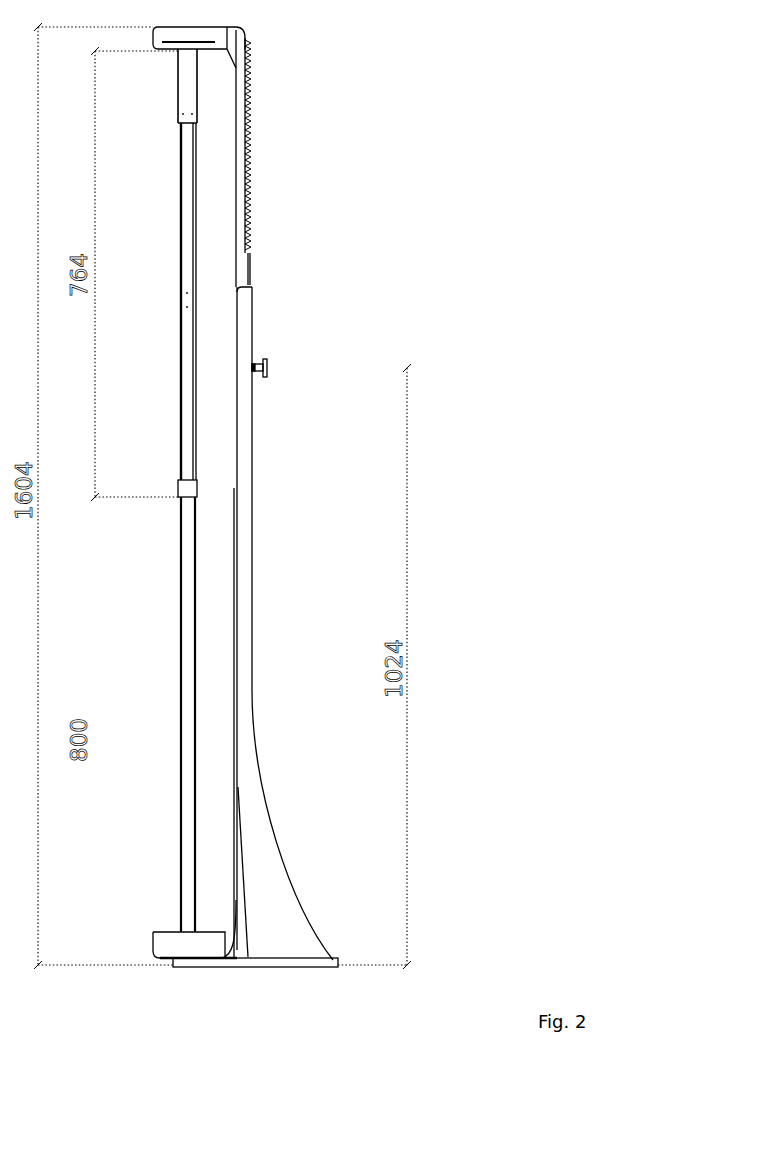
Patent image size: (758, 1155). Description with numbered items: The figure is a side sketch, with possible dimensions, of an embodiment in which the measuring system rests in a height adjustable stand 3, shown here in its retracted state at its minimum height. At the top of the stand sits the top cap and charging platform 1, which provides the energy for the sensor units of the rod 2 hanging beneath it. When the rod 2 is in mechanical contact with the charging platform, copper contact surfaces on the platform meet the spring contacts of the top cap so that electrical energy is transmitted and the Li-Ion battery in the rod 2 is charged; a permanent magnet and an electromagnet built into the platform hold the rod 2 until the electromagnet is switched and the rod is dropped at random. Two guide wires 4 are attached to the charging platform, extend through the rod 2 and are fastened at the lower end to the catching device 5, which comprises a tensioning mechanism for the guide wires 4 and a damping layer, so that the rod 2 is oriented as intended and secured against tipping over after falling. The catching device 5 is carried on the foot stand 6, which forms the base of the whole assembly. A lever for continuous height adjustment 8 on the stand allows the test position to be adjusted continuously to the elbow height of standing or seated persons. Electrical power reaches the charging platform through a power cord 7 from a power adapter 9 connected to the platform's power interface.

The top cap and charging platform 1 is at (253, 43).
The rod 2 is at (197, 150).
The height adjustable stand 3 is at (252, 337).
The guide wires 4 is at (195, 583).
The catching device 5 is at (227, 937).
The foot stand 6 is at (407, 965).
The power cord 7 is at (256, 224).
The lever for continuous height adjustment 8 is at (267, 368).
The power adapter 9 is at (323, 946).